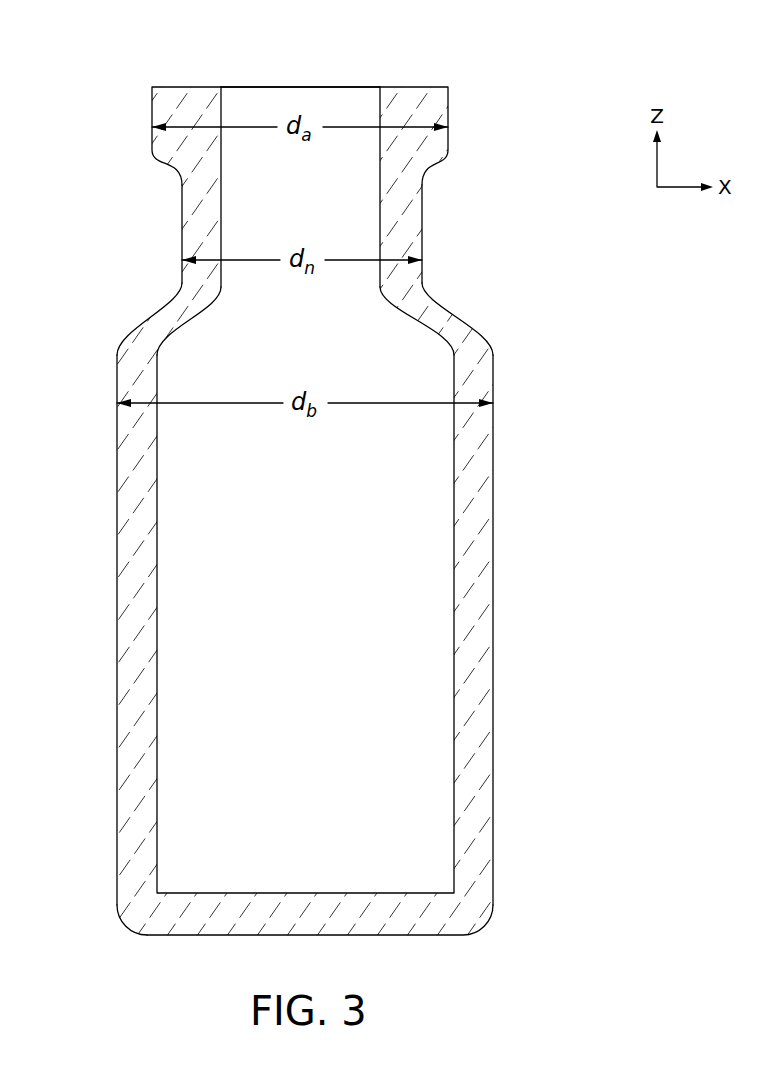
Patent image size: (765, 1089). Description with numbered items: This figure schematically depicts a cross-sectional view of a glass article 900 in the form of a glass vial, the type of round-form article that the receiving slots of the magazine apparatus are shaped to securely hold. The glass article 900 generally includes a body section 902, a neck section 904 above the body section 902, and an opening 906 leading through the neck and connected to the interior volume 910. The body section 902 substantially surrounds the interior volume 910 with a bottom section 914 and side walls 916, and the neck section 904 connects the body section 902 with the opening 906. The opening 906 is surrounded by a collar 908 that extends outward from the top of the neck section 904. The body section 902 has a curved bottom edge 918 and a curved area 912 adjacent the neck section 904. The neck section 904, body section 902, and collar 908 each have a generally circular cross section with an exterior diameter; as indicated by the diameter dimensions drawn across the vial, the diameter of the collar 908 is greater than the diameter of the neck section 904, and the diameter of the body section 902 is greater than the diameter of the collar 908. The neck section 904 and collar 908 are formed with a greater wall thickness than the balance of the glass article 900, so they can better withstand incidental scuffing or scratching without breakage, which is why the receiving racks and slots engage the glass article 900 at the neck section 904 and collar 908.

The glass article 900 is at (382, 517).
The body section 902 is at (494, 552).
The neck section 904 is at (423, 222).
The opening 906 is at (300, 45).
The collar 908 is at (150, 115).
The interior volume 910 is at (328, 656).
The curved area 912 is at (115, 347).
The bottom section 914 is at (410, 935).
The side walls 916 is at (116, 556).
The curved bottom edge 918 is at (123, 926).